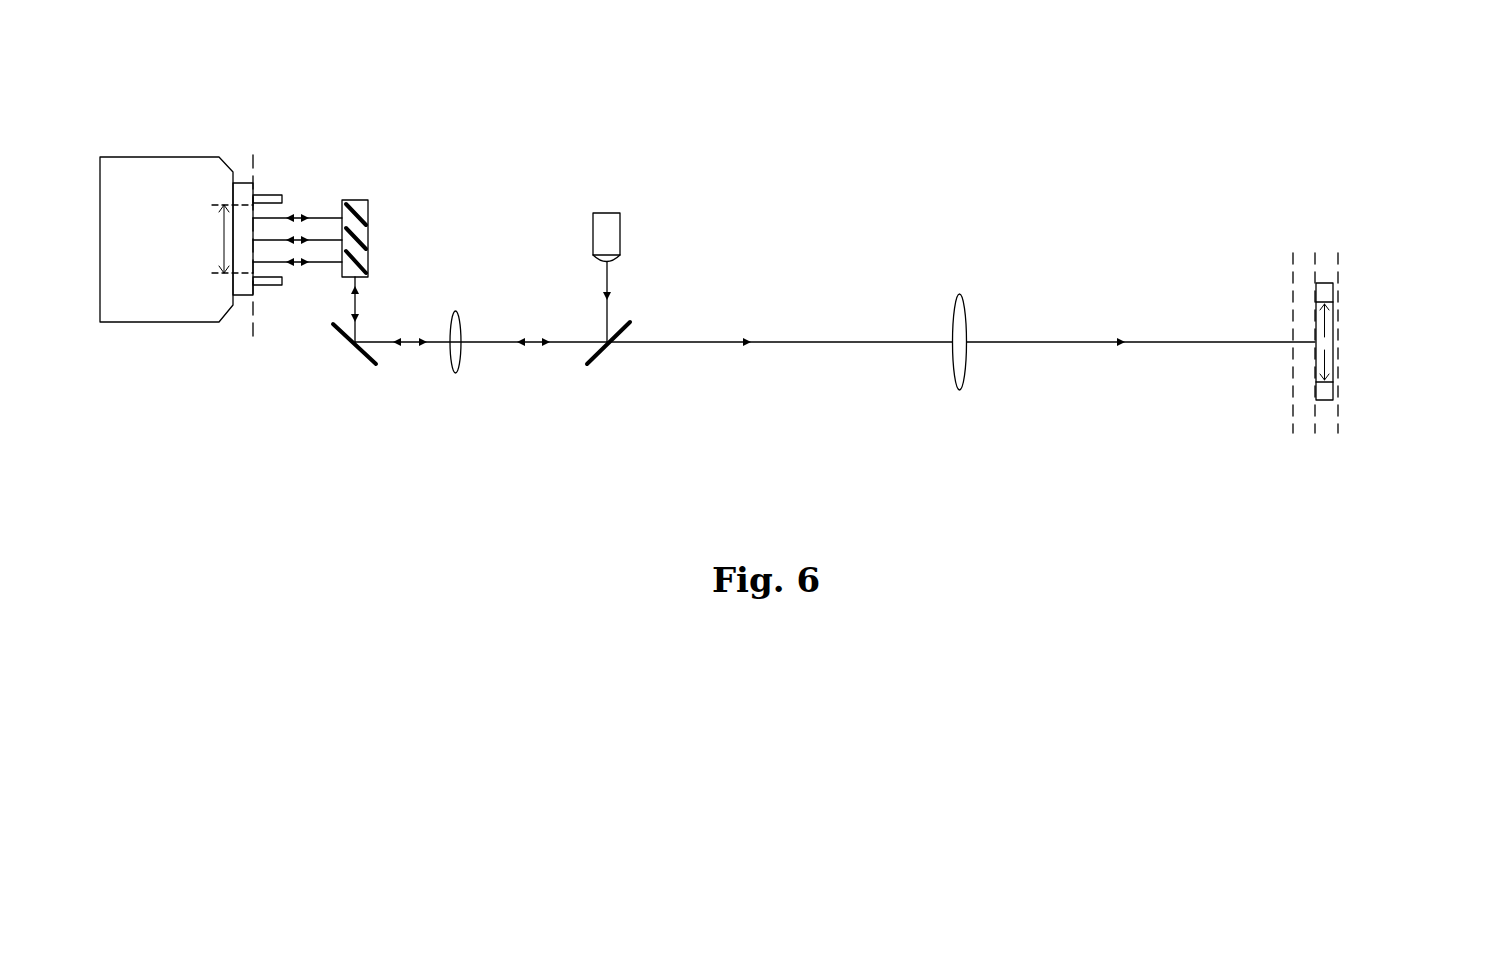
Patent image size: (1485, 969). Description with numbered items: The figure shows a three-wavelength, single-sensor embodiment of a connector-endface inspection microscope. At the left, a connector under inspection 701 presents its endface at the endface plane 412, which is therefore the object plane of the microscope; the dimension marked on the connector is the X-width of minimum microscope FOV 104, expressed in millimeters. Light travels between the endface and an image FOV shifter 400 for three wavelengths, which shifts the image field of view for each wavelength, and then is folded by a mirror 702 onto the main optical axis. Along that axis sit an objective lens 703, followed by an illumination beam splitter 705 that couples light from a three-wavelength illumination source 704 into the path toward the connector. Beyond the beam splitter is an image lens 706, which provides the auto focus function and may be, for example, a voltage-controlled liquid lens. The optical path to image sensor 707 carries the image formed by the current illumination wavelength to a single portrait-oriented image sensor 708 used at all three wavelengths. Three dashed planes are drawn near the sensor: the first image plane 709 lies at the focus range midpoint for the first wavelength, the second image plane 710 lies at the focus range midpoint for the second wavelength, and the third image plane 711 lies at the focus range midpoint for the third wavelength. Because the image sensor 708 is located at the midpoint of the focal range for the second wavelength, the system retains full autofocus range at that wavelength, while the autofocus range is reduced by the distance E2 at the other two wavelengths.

The connector under inspection 701 is at (160, 153).
The X-width of minimum microscope FOV 104 is at (222, 240).
The endface plane 412 is at (253, 344).
The image FOV shifter 400 is at (365, 197).
The mirror 702 is at (351, 344).
The objective lens 703 is at (455, 309).
The three-wavelength illumination source 704 is at (607, 208).
The illumination beam splitter 705 is at (610, 353).
The image lens 706 is at (953, 392).
The optical path to image sensor 707 is at (1141, 390).
The image sensor 708 is at (1323, 278).
The image plane 1 709 is at (1337, 440).
The image plane 2 710 is at (1317, 440).
The image plane 3 711 is at (1293, 440).